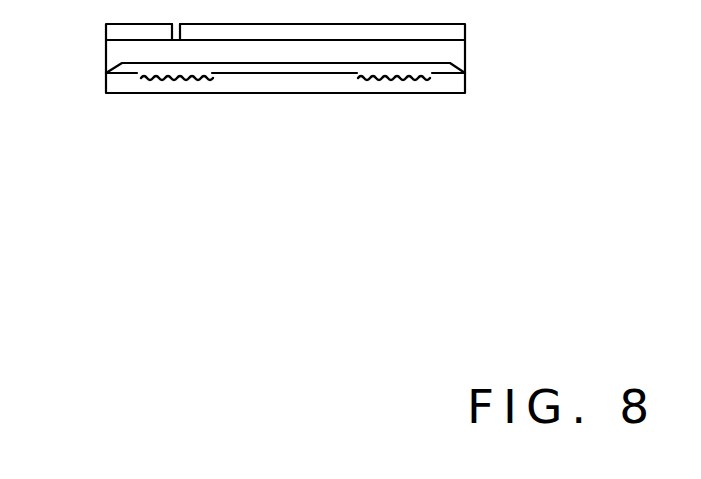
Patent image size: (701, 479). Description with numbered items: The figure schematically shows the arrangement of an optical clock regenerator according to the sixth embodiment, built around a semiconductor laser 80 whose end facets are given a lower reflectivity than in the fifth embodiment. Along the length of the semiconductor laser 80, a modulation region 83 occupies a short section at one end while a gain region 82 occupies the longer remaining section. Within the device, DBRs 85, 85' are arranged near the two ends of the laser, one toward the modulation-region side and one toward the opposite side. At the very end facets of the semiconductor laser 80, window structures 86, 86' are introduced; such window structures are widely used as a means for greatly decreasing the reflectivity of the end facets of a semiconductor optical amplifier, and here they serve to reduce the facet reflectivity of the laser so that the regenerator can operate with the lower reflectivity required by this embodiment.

The semiconductor laser 80 is at (87, 280).
The gain region 82 is at (418, 200).
The modulation region 83 is at (177, 198).
The DBR 85 is at (178, 115).
The DBR 85' is at (395, 117).
The window structure 86 is at (121, 113).
The window structure 86' is at (451, 116).